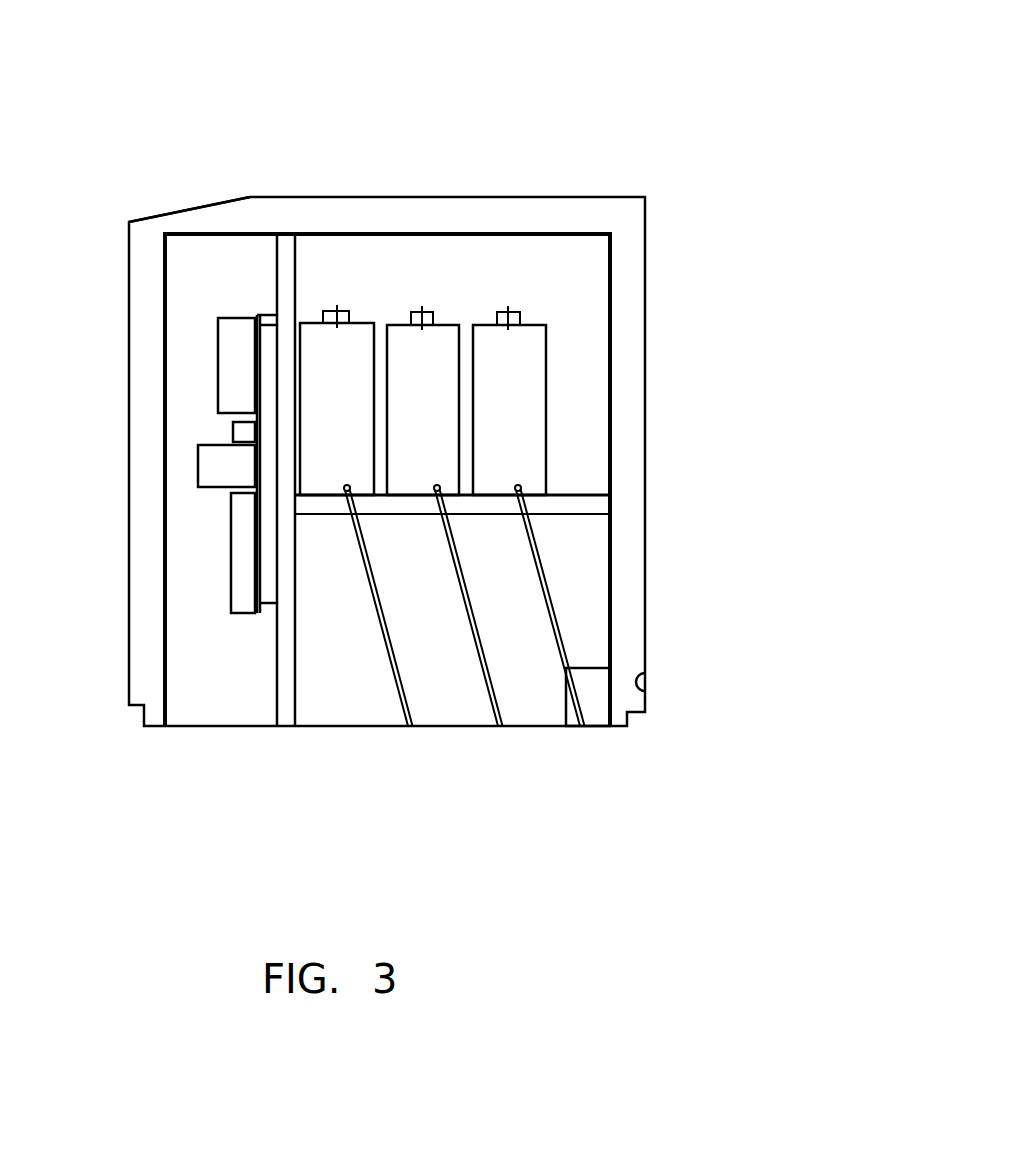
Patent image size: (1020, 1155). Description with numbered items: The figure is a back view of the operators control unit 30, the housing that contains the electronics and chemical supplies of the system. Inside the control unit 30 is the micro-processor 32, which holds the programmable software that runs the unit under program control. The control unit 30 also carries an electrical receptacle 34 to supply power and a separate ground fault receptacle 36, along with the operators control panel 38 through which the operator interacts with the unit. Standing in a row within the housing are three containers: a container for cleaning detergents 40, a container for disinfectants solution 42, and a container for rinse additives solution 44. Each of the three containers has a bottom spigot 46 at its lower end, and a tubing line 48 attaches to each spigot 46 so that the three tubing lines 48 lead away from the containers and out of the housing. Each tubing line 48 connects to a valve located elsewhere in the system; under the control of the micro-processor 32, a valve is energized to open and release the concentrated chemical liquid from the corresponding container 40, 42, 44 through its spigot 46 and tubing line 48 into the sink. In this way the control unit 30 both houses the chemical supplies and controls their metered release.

The operators control unit 30 is at (635, 652).
The micro-processor 32 is at (235, 337).
The electrical receptacle 34 is at (645, 680).
The ground fault receptacle 36 is at (590, 703).
The operators control panel 38 is at (200, 208).
The container for cleaning detergents 40 is at (358, 343).
The container for disinfectants solution 42 is at (443, 342).
The container for rinse additives solution 44 is at (539, 448).
The bottom spigot 46 is at (518, 488).
The tubing line 48 is at (582, 726).